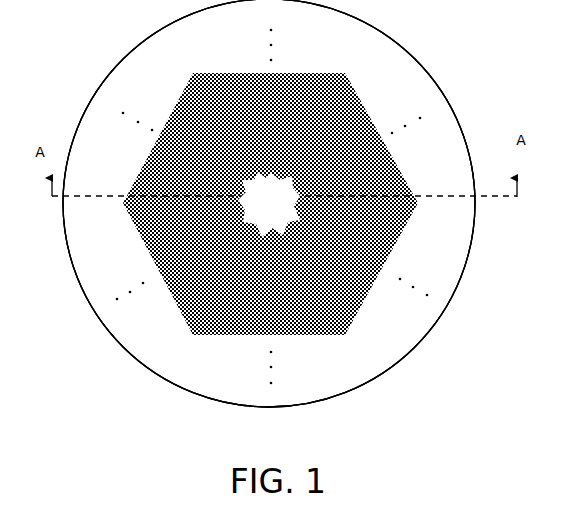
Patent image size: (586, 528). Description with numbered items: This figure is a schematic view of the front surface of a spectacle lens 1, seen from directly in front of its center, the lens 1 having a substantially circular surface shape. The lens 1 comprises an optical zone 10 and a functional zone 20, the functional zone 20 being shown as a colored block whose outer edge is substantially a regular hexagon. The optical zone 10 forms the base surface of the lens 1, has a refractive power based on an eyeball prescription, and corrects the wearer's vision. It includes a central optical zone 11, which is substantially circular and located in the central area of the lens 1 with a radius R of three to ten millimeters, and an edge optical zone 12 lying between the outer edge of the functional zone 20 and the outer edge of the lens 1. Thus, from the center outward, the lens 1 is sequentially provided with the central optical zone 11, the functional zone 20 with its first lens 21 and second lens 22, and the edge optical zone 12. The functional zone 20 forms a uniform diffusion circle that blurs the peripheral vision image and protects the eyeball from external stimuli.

The spectacle lens 1 is at (360, 358).
The optical zone 10 is at (378, 65).
The central optical zone 11 is at (283, 217).
The edge optical zone 12 is at (172, 350).
The functional zone 20 is at (222, 92).
The first lens 21 is at (412, 190).
The second lens 22 is at (302, 72).
The radius of the central optical zone R is at (272, 191).